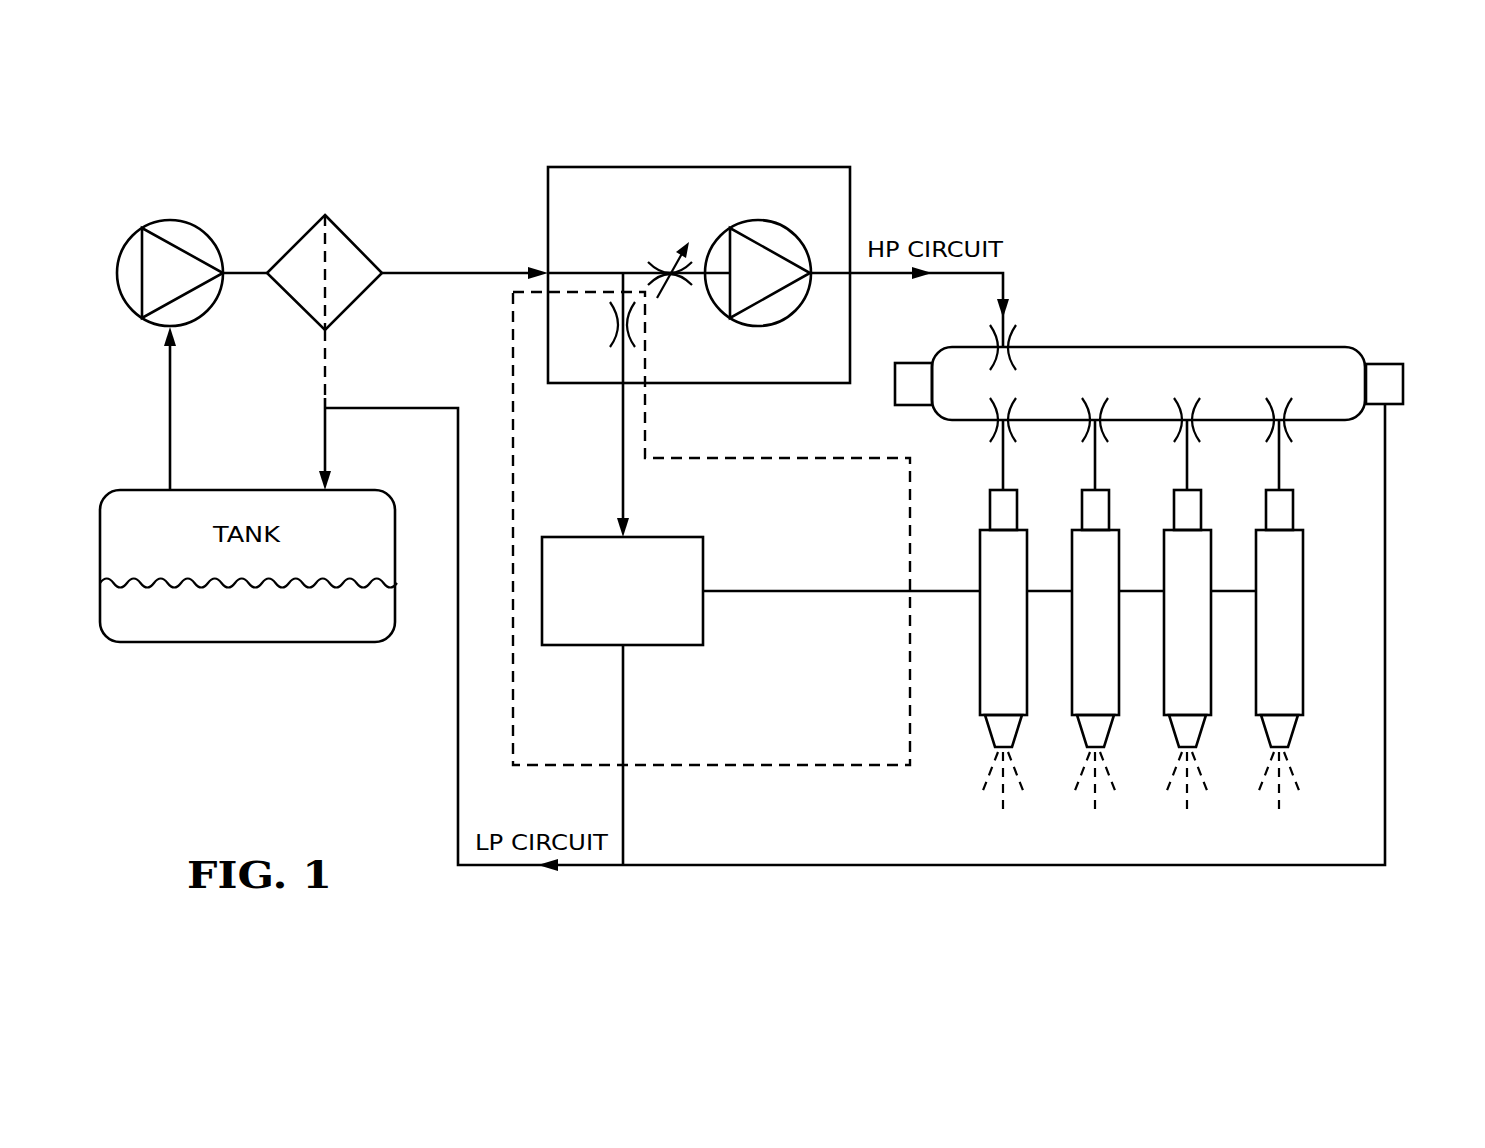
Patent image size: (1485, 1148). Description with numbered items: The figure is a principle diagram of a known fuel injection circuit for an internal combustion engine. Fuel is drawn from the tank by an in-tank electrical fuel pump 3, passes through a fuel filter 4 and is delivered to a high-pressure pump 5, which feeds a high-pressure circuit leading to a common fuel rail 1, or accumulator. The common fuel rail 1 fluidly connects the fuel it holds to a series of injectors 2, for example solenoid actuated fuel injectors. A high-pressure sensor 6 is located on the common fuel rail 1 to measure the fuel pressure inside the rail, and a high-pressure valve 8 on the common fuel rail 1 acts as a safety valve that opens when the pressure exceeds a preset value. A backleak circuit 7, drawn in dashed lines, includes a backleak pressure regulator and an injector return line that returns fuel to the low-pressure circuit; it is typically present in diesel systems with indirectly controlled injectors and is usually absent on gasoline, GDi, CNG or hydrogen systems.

The common fuel rail 1 is at (1225, 347).
The injectors 2 is at (982, 700).
The in-tank electrical fuel pump 3 is at (190, 222).
The fuel filter 4 is at (348, 238).
The high-pressure pump 5 is at (788, 167).
The high-pressure sensor 6 is at (908, 410).
The backleak circuit 7 is at (645, 458).
The high-pressure valve 8 is at (1377, 364).